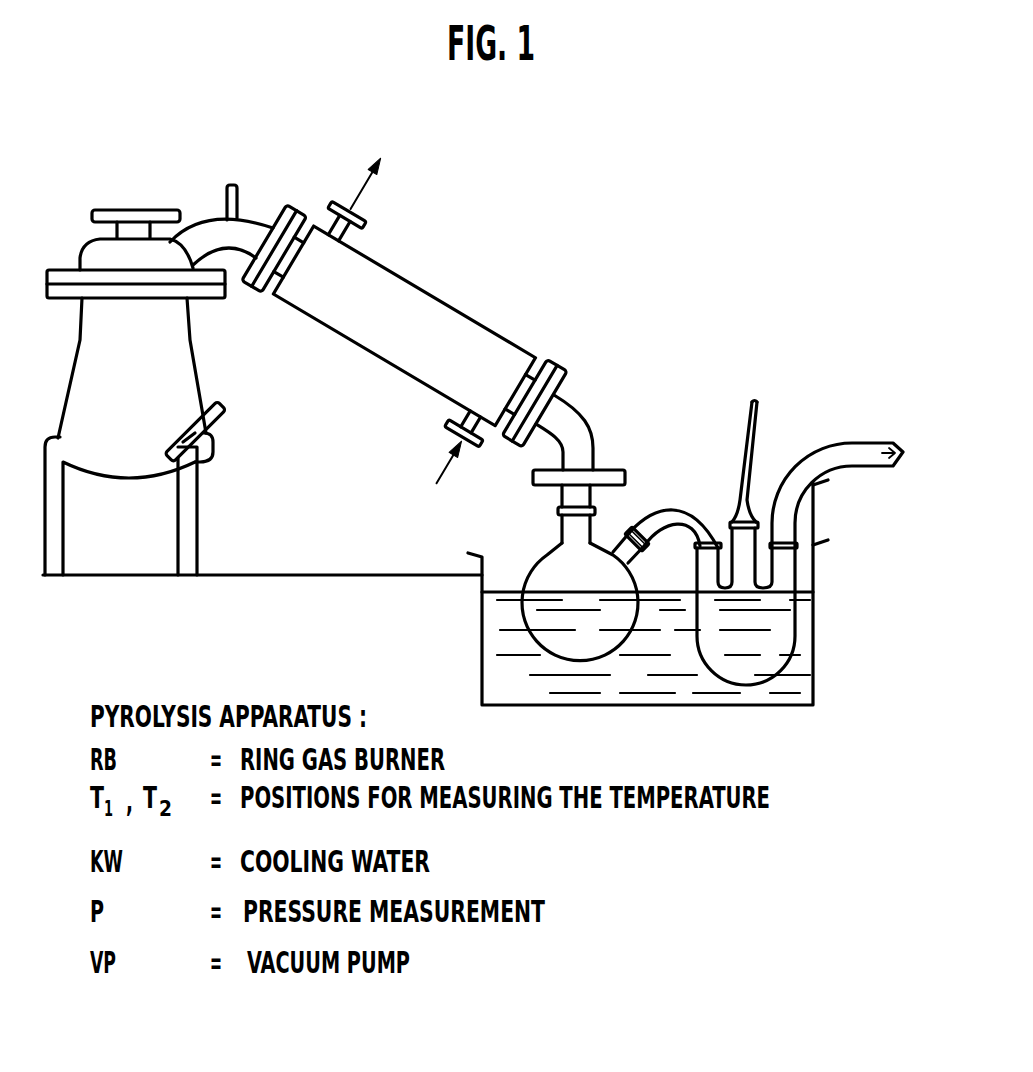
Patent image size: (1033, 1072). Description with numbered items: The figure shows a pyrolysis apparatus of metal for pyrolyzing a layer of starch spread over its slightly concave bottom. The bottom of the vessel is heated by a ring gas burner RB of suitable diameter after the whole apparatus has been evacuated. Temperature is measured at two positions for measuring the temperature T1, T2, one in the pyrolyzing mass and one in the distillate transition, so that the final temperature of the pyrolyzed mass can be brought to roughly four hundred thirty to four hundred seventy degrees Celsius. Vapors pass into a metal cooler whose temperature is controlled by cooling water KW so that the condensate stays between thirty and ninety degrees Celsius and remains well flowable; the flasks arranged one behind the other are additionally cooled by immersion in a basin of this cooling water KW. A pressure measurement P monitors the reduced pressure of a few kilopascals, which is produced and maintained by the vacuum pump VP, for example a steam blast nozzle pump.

The ring gas burner RB is at (262, 504).
The position for measuring the temperature T1 is at (217, 417).
The position for measuring the temperature T2 is at (239, 177).
The cooling water KW is at (531, 426).
The pressure measurement P is at (757, 447).
The vacuum pump VP is at (837, 495).